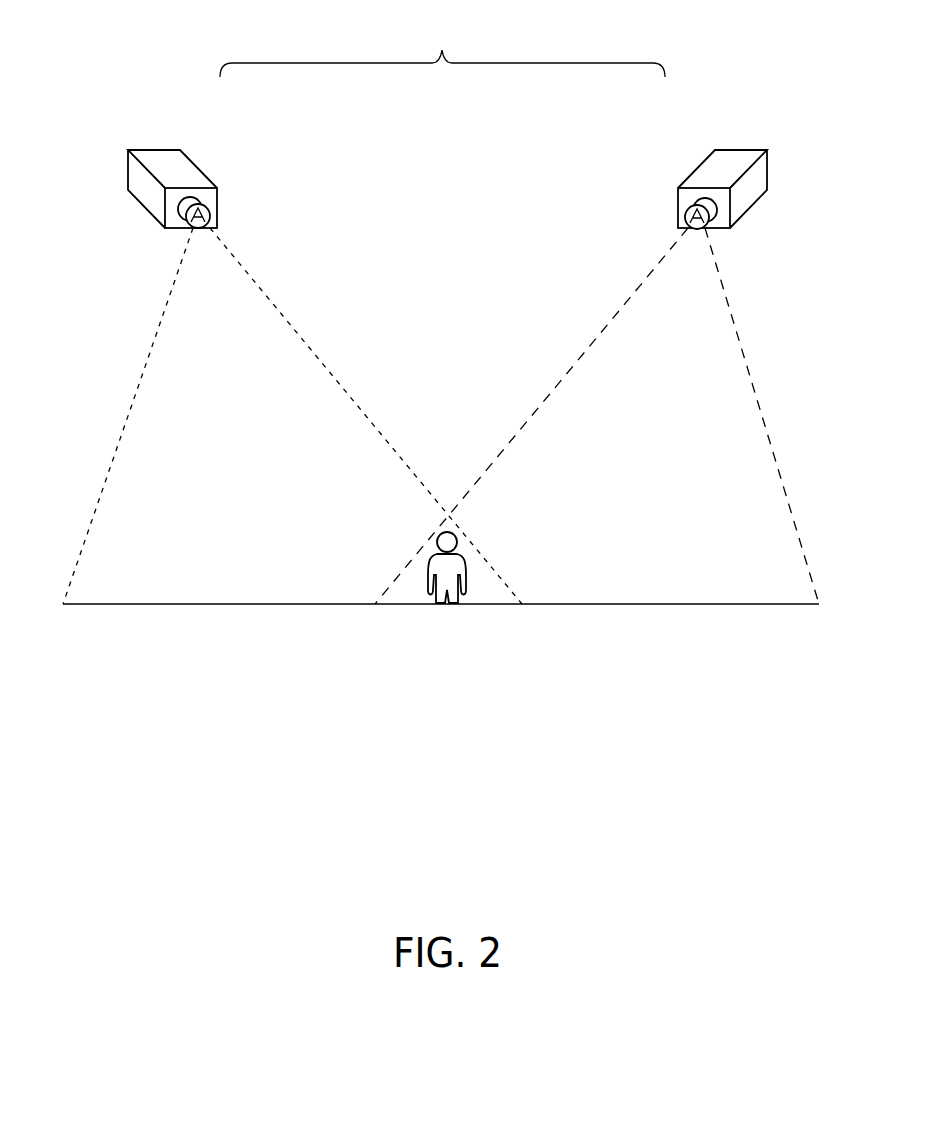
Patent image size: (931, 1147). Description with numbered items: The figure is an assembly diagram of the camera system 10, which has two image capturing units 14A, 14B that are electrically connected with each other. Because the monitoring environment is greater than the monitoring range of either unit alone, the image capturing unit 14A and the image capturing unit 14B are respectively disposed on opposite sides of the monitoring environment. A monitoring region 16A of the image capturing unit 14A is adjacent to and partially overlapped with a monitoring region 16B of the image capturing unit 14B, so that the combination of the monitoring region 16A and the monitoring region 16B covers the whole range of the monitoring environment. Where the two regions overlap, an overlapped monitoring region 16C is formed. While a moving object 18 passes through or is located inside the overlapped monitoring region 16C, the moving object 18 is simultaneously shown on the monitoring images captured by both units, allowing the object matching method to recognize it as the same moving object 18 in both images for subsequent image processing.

The camera system 10 is at (442, 50).
The image capturing unit 14A is at (198, 167).
The image capturing unit 14B is at (697, 167).
The monitoring region 16A is at (272, 523).
The monitoring region 16B is at (659, 523).
The overlapped monitoring region 16C is at (408, 593).
The moving object 18 is at (447, 532).